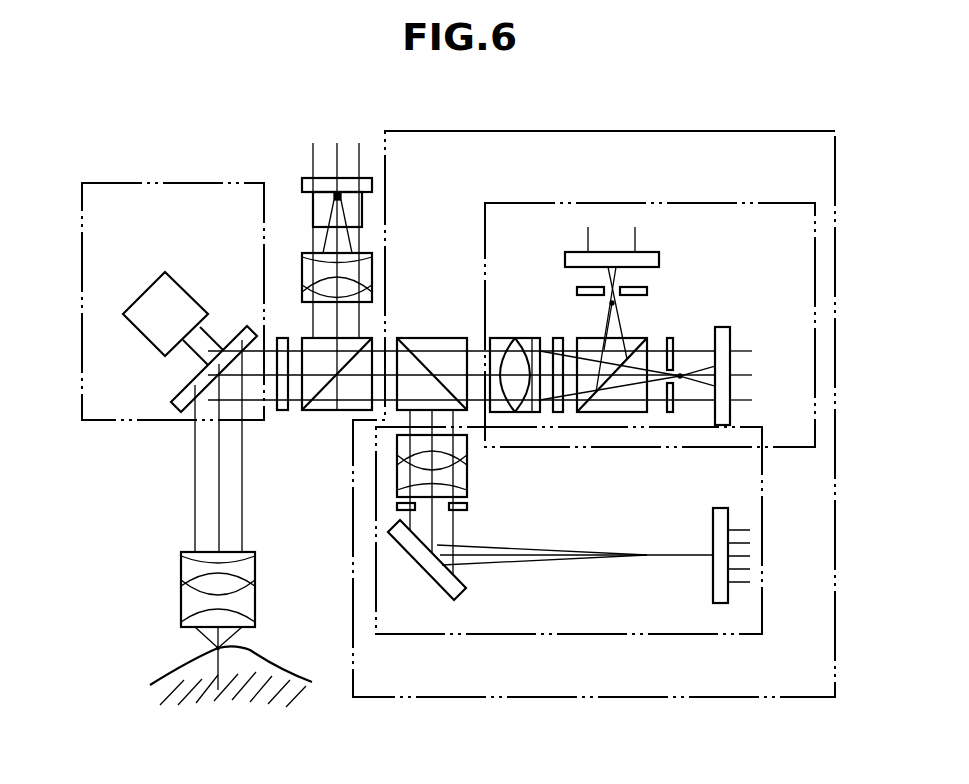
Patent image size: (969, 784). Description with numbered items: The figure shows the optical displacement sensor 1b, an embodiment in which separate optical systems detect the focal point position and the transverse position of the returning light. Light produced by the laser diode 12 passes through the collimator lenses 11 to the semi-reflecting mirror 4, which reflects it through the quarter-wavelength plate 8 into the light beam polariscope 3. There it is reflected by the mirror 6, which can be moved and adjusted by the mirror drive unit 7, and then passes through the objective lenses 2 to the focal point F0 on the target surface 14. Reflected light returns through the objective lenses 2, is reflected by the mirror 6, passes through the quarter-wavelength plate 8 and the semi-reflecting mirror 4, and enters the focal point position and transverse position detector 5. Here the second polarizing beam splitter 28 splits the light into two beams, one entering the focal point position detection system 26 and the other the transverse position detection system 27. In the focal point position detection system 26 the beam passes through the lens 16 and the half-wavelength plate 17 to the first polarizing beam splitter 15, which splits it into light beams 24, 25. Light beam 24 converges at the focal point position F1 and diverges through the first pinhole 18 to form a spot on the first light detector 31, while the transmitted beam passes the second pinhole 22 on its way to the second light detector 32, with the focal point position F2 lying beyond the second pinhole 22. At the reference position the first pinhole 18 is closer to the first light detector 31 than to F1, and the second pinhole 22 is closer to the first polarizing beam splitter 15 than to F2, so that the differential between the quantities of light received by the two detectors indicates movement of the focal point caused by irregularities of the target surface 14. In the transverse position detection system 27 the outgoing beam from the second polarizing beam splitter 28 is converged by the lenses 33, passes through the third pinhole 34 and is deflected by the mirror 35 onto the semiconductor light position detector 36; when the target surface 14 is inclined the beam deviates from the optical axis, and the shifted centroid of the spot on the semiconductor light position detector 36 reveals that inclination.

The optical displacement sensor 1b is at (575, 118).
The objective lenses 2 is at (255, 583).
The light beam polariscope 3 is at (211, 183).
The semi-reflecting mirror 4 is at (336, 412).
The focal point position and transverse position detector 5 is at (676, 131).
The mirror 6 is at (246, 327).
The mirror drive unit 7 is at (156, 276).
The quarter-wavelength plate 8 is at (282, 412).
The collimator lenses 11 is at (303, 286).
The laser diode 12 is at (313, 205).
The target surface 14 is at (279, 670).
The first polarizing beam splitter 15 is at (614, 412).
The lens 16 is at (512, 338).
The half-wavelength plate 17 is at (556, 412).
The first pinhole 18 is at (647, 291).
The second pinhole 22 is at (668, 410).
The light beam 24 is at (616, 326).
The light beam 25 is at (648, 340).
The focal point position detection system 26 is at (775, 203).
The transverse position detection system 27 is at (762, 528).
The second polarizing beam splitter 28 is at (436, 338).
The first light detector 31 is at (655, 252).
The second light detector 32 is at (736, 327).
The lenses 33 is at (467, 474).
The third pinhole 34 is at (467, 506).
The mirror 35 is at (466, 596).
The semiconductor light position detector 36 is at (725, 510).
The focal point F0 is at (194, 649).
The focal point position F1 is at (595, 317).
The focal point position F2 is at (692, 394).